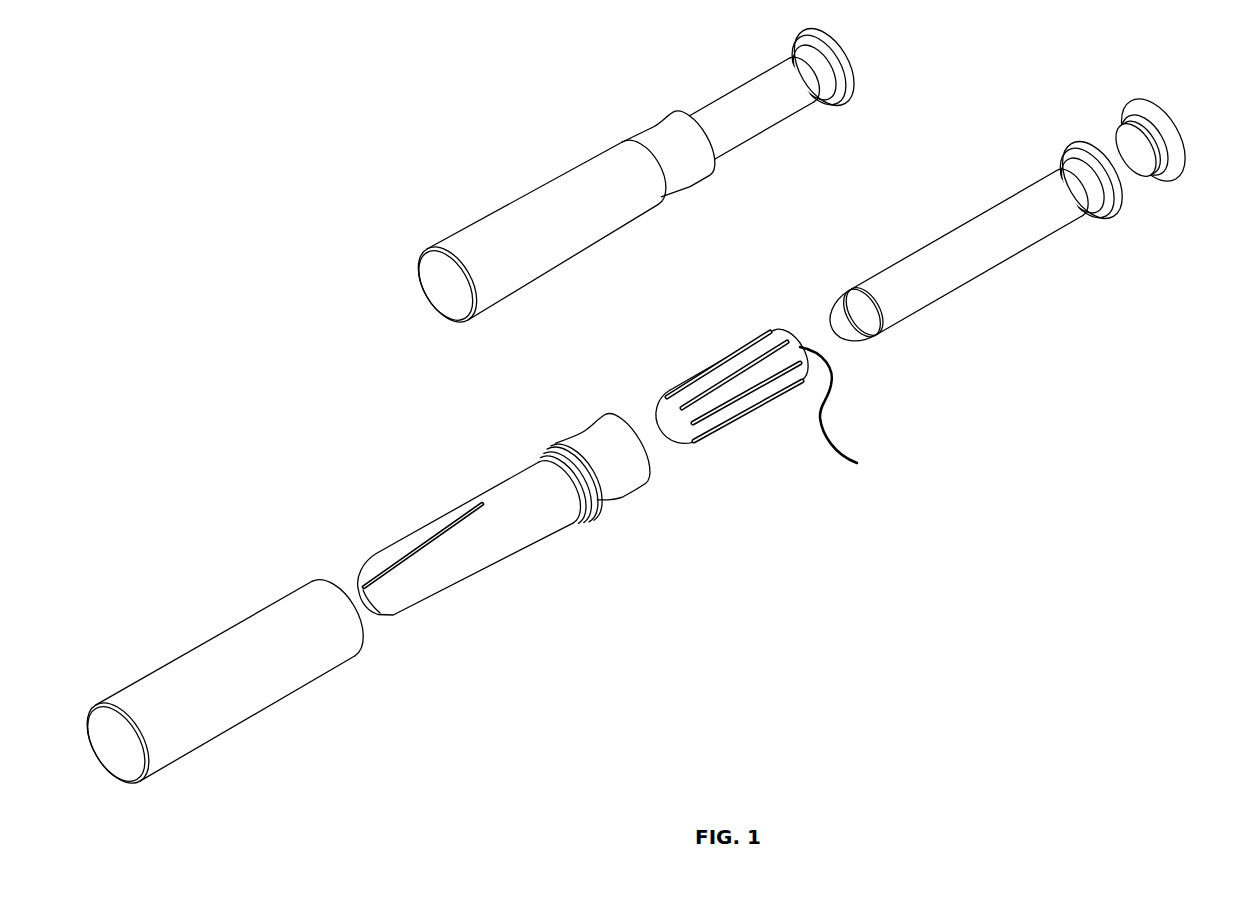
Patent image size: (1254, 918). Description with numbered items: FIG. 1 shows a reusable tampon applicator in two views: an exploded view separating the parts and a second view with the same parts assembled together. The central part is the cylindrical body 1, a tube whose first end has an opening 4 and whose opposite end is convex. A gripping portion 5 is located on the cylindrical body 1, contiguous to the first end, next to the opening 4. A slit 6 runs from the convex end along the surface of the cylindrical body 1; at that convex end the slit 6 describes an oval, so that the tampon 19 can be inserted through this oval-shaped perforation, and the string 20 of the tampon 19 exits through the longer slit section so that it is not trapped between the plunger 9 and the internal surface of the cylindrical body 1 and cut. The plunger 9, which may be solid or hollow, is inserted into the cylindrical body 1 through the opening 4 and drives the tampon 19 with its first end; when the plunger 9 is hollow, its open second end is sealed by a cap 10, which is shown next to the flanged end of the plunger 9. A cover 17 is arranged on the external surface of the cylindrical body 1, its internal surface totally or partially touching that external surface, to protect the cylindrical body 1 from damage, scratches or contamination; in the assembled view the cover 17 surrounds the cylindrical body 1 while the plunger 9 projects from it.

The cylindrical body 1 is at (654, 131).
The opening 4 is at (617, 417).
The gripping portion 5 is at (607, 492).
The slit 6 is at (450, 527).
The plunger 9 is at (757, 90).
The cap 10 is at (1177, 160).
The cover 17 is at (507, 220).
The tampon 19 is at (720, 360).
The string 20 is at (828, 405).